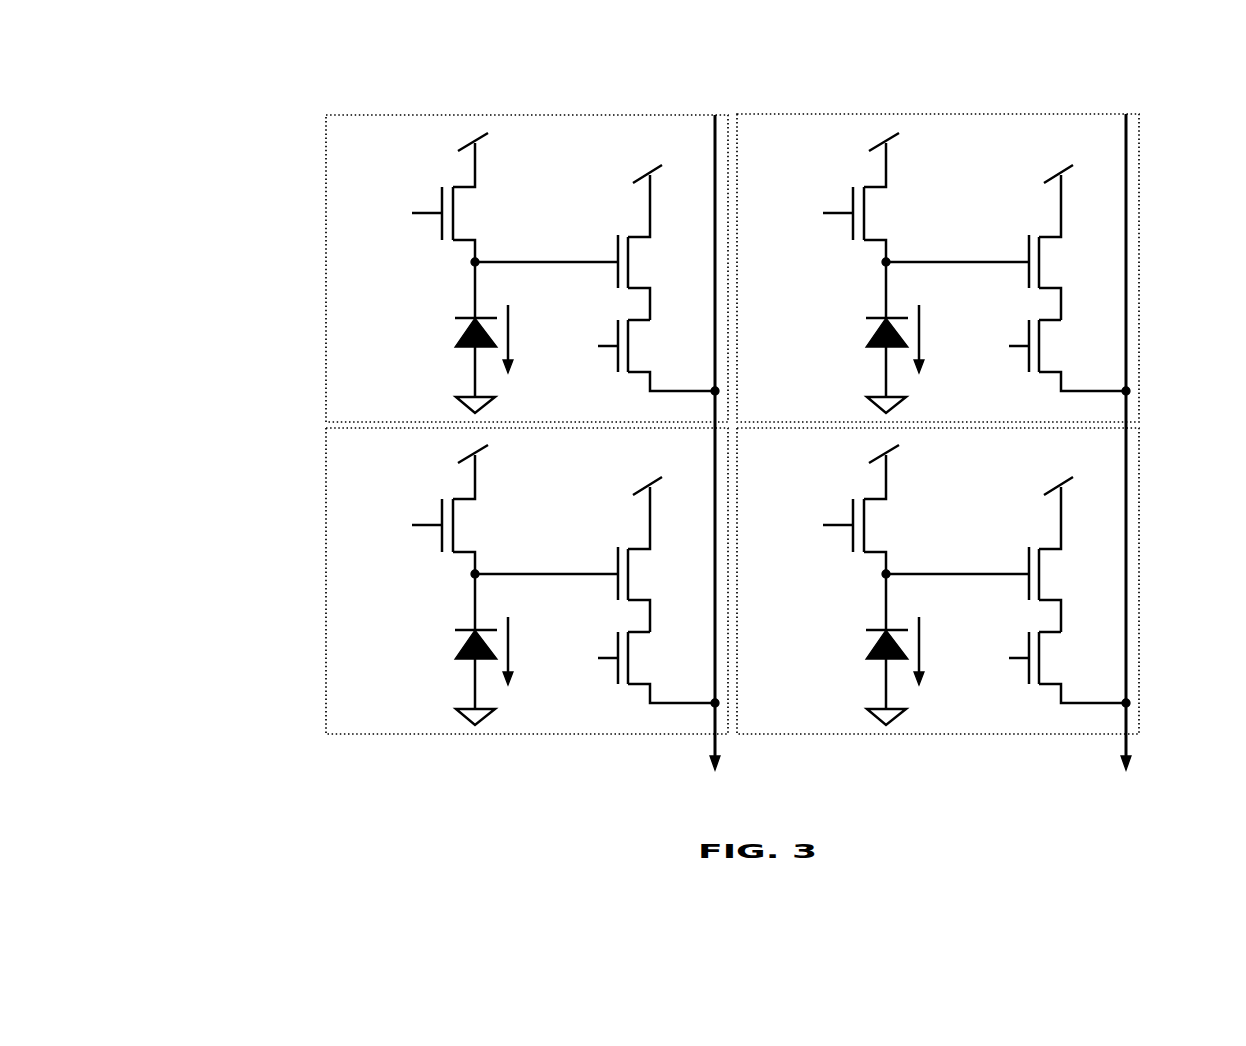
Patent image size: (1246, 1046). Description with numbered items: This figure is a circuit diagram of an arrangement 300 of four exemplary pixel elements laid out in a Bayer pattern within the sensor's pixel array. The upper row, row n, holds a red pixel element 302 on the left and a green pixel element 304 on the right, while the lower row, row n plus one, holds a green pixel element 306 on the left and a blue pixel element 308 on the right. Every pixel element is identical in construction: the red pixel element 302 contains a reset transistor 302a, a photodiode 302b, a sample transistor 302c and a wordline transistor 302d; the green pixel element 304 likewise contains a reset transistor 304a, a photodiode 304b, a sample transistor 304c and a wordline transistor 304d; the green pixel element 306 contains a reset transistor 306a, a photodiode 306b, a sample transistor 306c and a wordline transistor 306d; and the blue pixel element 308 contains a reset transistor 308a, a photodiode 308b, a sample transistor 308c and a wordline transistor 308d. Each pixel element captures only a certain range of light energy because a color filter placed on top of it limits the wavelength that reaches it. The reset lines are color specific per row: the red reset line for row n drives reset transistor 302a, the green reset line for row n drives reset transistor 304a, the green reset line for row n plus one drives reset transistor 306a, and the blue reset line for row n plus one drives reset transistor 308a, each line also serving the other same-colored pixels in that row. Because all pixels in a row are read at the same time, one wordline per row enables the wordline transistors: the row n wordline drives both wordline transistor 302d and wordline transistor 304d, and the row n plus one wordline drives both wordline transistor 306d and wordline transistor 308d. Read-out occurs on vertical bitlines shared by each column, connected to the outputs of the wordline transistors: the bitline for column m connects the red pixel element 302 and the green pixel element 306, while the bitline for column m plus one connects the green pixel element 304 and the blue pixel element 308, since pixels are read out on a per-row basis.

The arrangement 300 is at (1215, 96).
The red pixel element 302 is at (586, 115).
The reset transistor 302a is at (460, 214).
The photodiode 302b is at (458, 337).
The sample transistor 302c is at (632, 263).
The wordline (WL) transistor 302d is at (632, 350).
The green pixel element 304 is at (938, 245).
The reset transistor 304a is at (882, 197).
The photodiode 304b is at (854, 329).
The sample transistor 304c is at (1072, 242).
The wordline (WL) transistor 304d is at (1067, 355).
The green pixel element 306 is at (565, 423).
The reset transistor 306a is at (471, 509).
The photodiode 306b is at (443, 641).
The sample transistor 306c is at (661, 554).
The wordline (WL) transistor 306d is at (656, 667).
The blue pixel element 308 is at (938, 608).
The reset transistor 308a is at (882, 509).
The photodiode 308b is at (854, 641).
The sample transistor 308c is at (1072, 554).
The wordline (WL) transistor 308d is at (1067, 667).